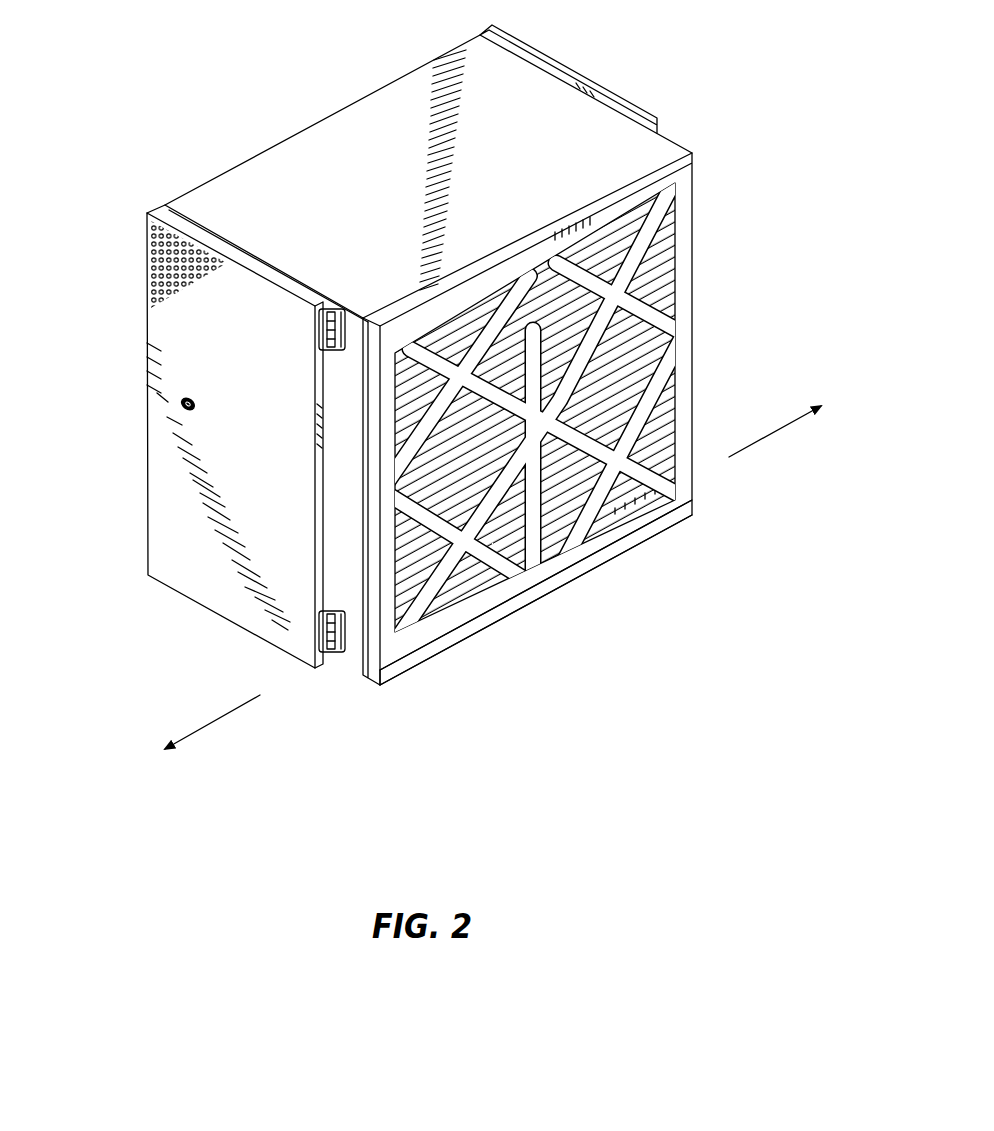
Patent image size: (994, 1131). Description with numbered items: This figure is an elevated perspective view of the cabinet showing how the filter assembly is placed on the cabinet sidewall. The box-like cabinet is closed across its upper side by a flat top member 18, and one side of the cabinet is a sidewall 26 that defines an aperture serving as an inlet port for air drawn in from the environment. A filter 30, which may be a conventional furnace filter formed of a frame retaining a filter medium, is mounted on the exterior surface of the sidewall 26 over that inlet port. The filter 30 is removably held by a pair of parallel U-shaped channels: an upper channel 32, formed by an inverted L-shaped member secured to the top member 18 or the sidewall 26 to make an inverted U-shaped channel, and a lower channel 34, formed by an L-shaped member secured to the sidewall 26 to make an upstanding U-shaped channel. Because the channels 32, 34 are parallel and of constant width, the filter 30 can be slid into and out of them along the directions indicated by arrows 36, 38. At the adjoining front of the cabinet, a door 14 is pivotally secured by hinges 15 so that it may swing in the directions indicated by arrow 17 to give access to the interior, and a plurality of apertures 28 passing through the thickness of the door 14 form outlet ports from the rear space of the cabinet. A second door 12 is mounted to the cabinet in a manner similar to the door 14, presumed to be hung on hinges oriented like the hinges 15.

The door 12 is at (628, 100).
The door 14 is at (262, 477).
The hinges 15 is at (318, 343).
The arrow 17 is at (186, 407).
The top member 18 is at (390, 224).
The sidewall 26 is at (660, 272).
The apertures 28 is at (155, 272).
The filter 30 is at (673, 383).
The channel 32 is at (690, 153).
The channel 34 is at (402, 667).
The arrow 36 is at (217, 723).
The arrow 38 is at (780, 430).